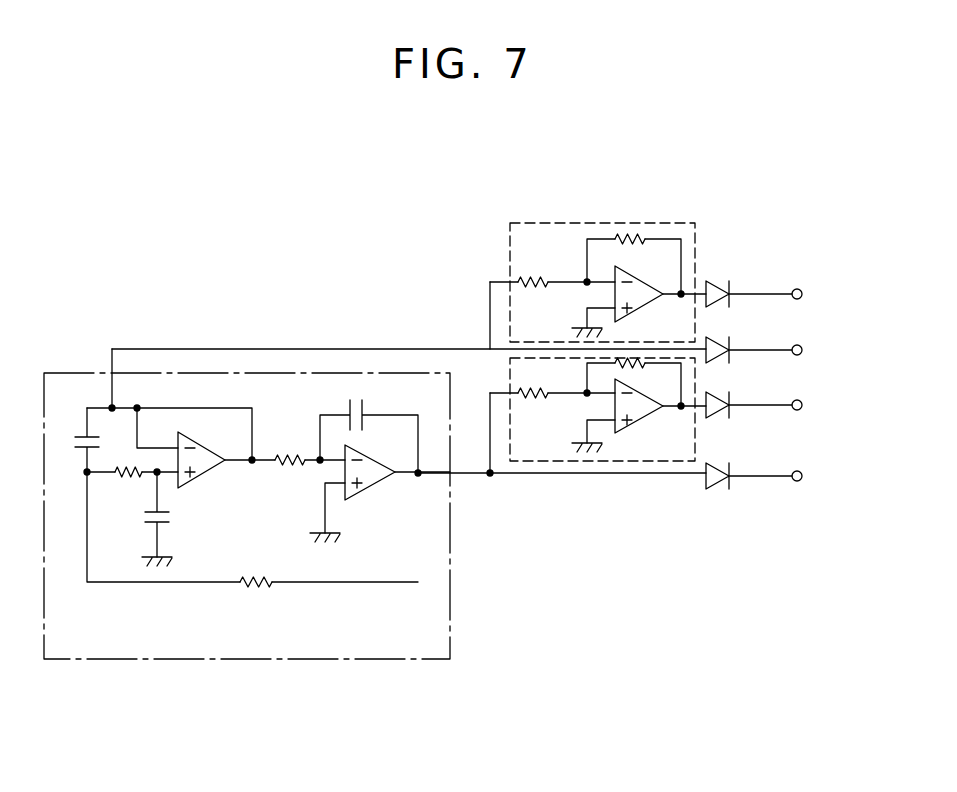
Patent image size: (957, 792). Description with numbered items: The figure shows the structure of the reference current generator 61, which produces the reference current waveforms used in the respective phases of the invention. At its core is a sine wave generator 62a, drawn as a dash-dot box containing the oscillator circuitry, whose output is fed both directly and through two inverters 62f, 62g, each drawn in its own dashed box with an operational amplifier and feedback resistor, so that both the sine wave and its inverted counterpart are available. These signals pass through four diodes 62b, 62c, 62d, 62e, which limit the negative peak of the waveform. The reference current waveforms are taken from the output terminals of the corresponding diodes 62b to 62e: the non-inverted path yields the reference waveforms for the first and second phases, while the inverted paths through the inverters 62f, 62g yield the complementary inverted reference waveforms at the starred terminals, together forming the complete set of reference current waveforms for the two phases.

The reference current generator 61 is at (448, 263).
The sine wave generator 62a is at (257, 655).
The diode 62b is at (708, 338).
The diode 62c is at (715, 282).
The diode 62d is at (716, 489).
The diode 62e is at (716, 418).
The inverter 62f is at (663, 223).
The inverter 62g is at (633, 447).